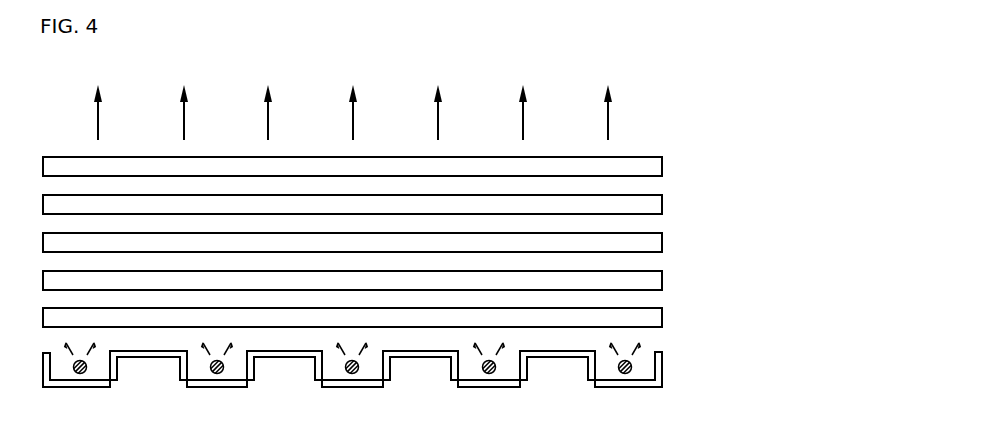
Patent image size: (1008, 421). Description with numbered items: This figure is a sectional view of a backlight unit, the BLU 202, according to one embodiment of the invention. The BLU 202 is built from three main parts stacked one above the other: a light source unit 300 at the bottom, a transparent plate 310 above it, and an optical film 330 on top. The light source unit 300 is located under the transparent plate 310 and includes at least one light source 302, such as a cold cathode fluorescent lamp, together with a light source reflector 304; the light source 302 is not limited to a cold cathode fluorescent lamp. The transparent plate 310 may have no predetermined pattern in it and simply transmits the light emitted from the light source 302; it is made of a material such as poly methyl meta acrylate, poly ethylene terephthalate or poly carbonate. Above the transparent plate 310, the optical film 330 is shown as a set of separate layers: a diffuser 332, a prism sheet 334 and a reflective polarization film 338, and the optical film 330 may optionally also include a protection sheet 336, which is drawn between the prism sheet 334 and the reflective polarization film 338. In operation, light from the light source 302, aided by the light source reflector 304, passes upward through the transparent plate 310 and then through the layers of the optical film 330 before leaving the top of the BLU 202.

The BLU 202 is at (660, 131).
The light source unit 300 is at (817, 340).
The light source 302 is at (637, 356).
The light source reflector 304 is at (657, 369).
The transparent plate 310 is at (662, 318).
The optical film 330 is at (813, 283).
The diffuser 332 is at (662, 281).
The prism sheet 334 is at (662, 243).
The protection sheet 336 is at (662, 205).
The reflective polarization film 338 is at (662, 167).